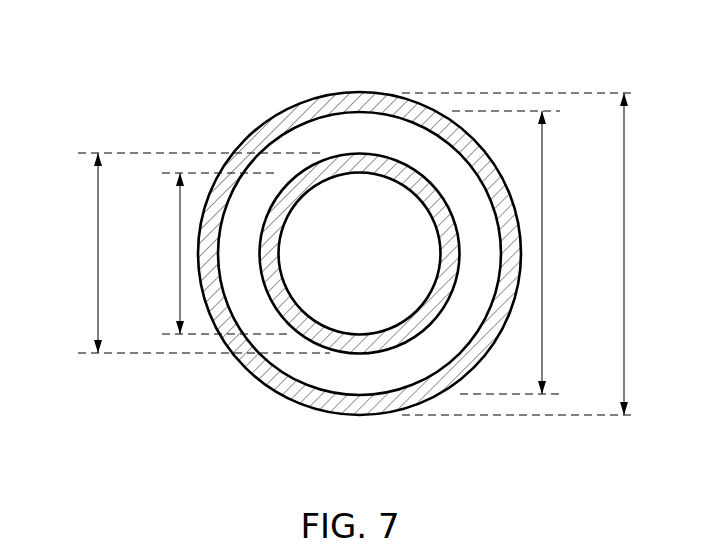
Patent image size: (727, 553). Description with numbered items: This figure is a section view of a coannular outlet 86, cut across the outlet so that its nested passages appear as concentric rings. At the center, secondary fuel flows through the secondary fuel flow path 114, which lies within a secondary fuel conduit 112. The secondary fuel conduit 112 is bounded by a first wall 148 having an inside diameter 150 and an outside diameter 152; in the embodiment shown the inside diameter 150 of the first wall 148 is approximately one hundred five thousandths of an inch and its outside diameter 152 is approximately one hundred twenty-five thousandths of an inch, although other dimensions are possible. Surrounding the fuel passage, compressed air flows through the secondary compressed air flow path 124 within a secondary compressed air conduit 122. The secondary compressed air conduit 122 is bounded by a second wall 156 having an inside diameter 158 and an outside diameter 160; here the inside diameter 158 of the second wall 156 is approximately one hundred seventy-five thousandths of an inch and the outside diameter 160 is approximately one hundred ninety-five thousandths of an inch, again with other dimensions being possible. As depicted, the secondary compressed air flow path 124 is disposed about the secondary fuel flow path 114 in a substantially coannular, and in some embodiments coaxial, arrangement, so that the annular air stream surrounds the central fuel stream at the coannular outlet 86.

The coannular outlet 86 is at (365, 244).
The secondary fuel conduit 112 is at (397, 257).
The secondary fuel flow path 114 is at (333, 269).
The secondary compressed air conduit 122 is at (359, 278).
The secondary compressed air flow path 124 is at (334, 387).
The first wall 148 is at (461, 283).
The inside diameter 150 is at (180, 256).
The outside diameter 152 is at (98, 215).
The second wall 156 is at (328, 410).
The inside diameter 158 is at (542, 257).
The outside diameter 160 is at (624, 214).